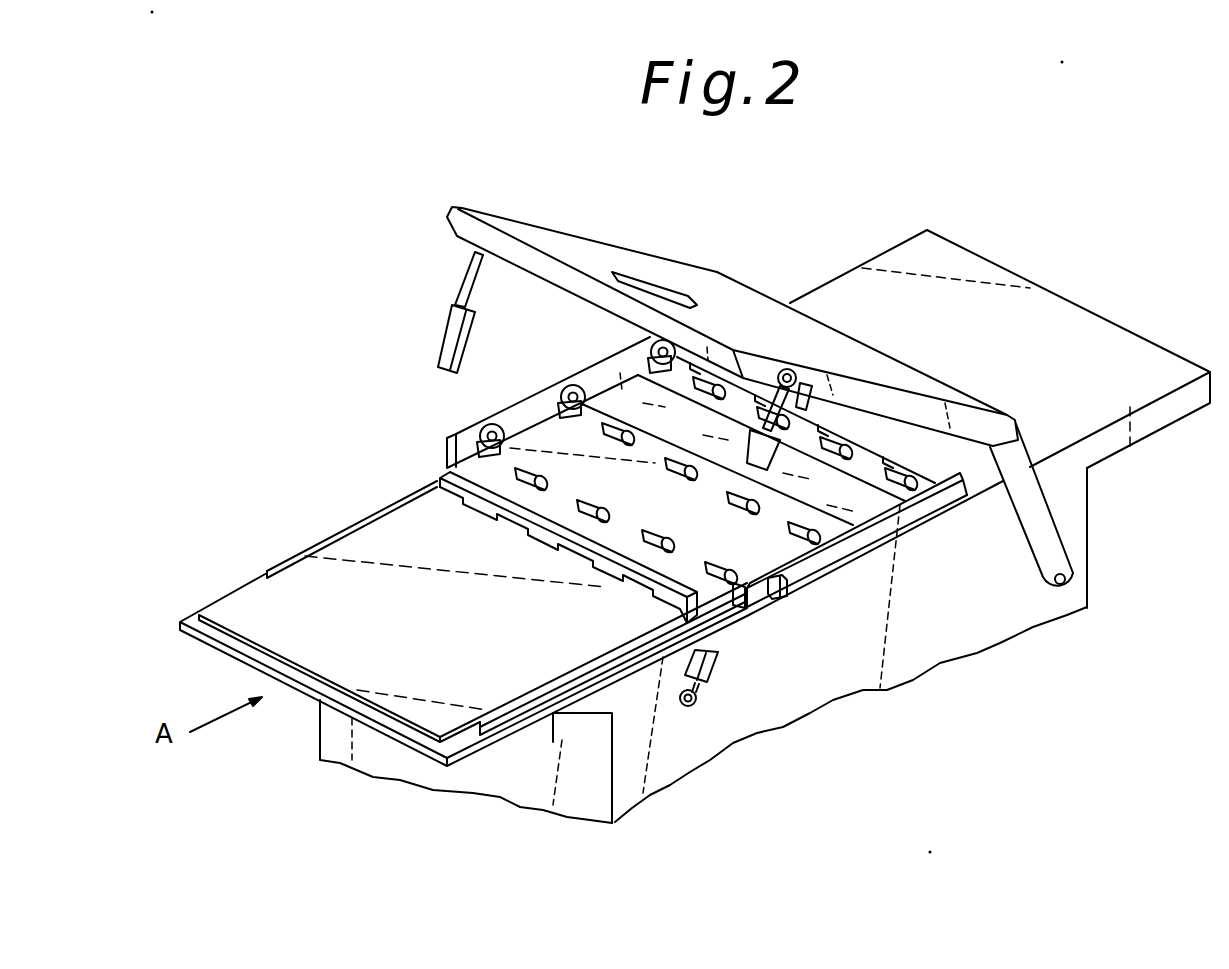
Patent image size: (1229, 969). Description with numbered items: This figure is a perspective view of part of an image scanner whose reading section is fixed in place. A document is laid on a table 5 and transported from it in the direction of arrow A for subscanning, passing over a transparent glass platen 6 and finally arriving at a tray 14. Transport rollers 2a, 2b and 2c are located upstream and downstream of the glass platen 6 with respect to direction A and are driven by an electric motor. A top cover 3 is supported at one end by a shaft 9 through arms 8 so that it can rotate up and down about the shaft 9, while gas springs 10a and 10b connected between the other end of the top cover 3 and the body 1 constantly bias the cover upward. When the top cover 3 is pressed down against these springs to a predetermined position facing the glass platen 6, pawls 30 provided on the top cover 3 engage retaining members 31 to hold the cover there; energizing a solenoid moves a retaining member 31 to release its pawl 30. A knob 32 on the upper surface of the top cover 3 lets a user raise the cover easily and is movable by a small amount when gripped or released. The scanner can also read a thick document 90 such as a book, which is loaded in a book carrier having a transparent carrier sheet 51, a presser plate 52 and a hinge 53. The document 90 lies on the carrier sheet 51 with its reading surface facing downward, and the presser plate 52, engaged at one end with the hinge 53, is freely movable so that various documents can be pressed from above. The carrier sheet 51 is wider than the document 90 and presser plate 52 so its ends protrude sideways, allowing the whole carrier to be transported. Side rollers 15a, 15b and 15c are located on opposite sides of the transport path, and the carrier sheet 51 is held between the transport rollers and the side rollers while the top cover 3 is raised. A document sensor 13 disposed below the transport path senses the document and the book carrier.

The body 1 is at (1077, 543).
The transport roller 2a is at (728, 585).
The transport roller 2b is at (913, 500).
The transport roller 2c is at (945, 503).
The top cover 3 is at (545, 234).
The table 5 is at (543, 730).
The glass platen 6 is at (955, 500).
The arms 8 is at (1047, 510).
The shaft 9 is at (1067, 582).
The gas spring 10a is at (717, 668).
The gas spring 10b is at (450, 333).
The document sensor 13 is at (513, 413).
The tray 14 is at (1113, 342).
The side roller 15a is at (477, 423).
The side roller 15b is at (558, 383).
The side roller 15c is at (628, 345).
The pawl 30 is at (812, 382).
The retaining member 31 is at (840, 530).
The knob 32 is at (666, 290).
The carrier sheet 51 is at (195, 637).
The presser plate 52 is at (240, 612).
The hinge 53 is at (440, 473).
The document 90 is at (618, 657).